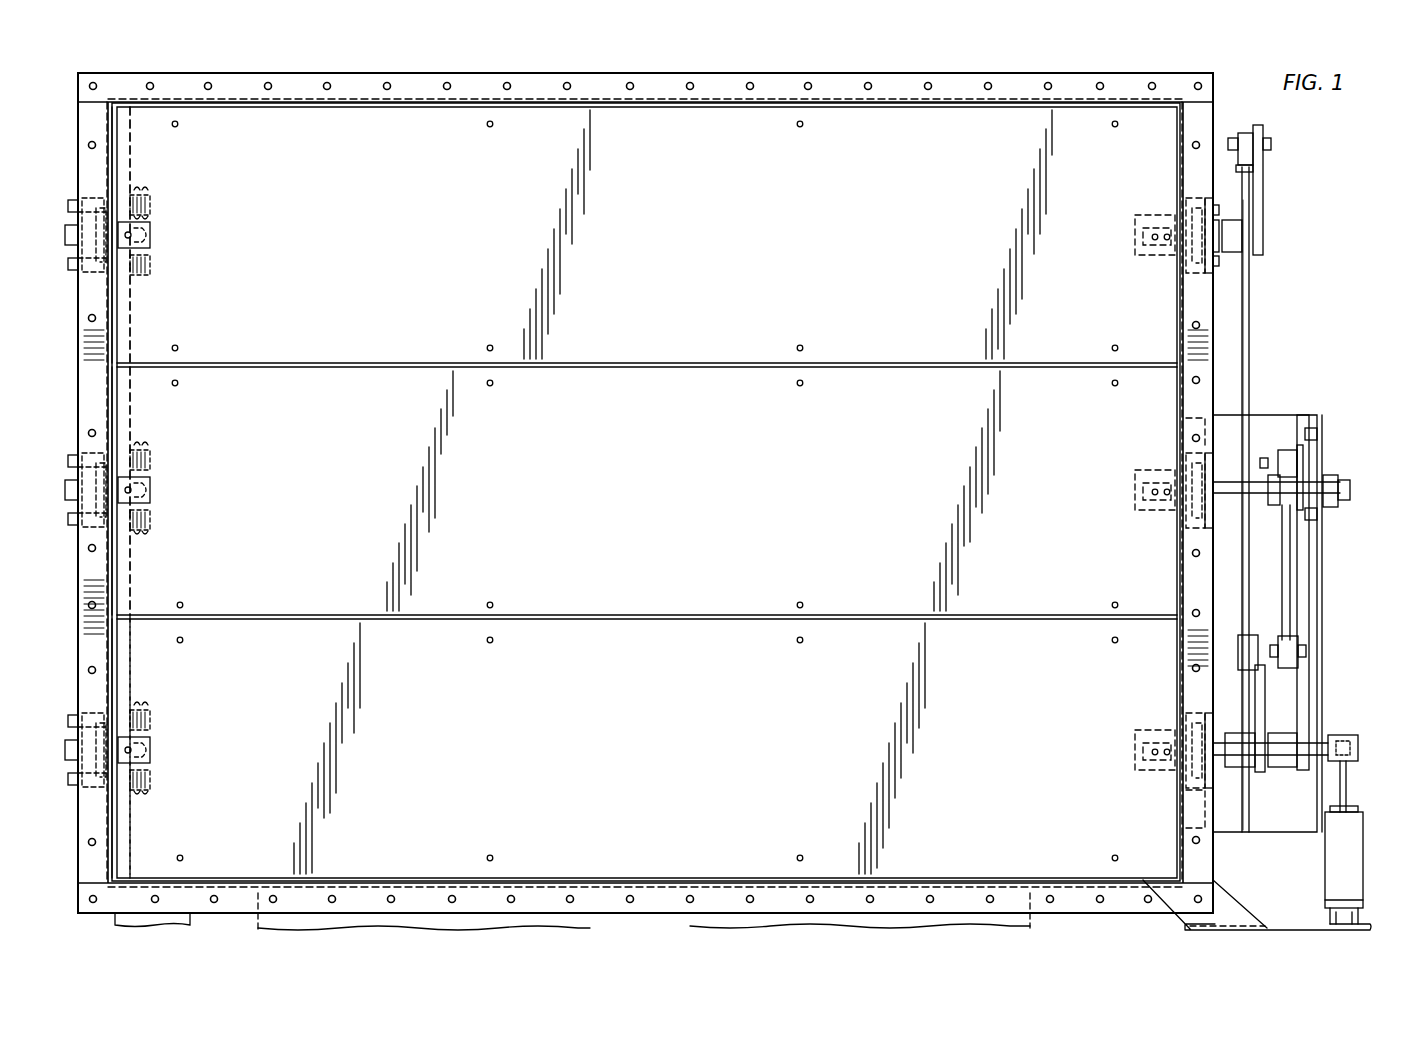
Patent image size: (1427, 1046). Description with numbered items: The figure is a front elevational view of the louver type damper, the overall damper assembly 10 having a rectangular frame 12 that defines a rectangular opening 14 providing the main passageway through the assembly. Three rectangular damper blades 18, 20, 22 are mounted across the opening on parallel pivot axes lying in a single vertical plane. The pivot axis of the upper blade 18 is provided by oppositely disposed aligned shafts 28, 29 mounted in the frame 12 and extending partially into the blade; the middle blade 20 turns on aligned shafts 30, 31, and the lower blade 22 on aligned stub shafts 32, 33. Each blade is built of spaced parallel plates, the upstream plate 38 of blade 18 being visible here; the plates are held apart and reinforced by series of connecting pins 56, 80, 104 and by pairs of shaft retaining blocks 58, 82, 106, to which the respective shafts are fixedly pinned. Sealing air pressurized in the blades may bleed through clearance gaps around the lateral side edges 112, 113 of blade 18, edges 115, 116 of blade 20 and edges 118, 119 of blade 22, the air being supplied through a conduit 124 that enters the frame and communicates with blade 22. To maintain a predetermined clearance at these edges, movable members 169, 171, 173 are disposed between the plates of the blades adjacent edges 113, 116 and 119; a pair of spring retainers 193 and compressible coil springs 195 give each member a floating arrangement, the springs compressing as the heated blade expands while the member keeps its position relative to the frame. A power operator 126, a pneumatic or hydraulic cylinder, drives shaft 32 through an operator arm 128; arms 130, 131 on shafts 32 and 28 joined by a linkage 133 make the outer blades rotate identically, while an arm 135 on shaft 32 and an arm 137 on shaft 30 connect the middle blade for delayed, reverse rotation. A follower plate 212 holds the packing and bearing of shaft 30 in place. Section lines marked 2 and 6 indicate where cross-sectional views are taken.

The section line 2- 2 is at (673, 52).
The section line 6- 6 is at (1090, 488).
The damper assembly 10 is at (1264, 380).
The rectangular frame 12 is at (885, 82).
The rectangular opening 14 is at (844, 104).
The damper blade 18 is at (609, 225).
The damper blade 20 is at (619, 469).
The damper blade 22 is at (638, 770).
The shaft 28 is at (1242, 236).
The shaft 29 is at (65, 232).
The shaft 30 is at (1264, 479).
The shaft 31 is at (65, 486).
The stub shaft 32 is at (1232, 750).
The stub shaft 33 is at (65, 750).
The upstream plate 38 is at (303, 348).
The connecting pins 56 is at (494, 124).
The shaft retaining blocks 58 is at (150, 232).
The connecting pins 80 is at (490, 386).
The shaft retaining blocks 82 is at (150, 490).
The connecting pins 104 is at (185, 640).
The shaft retaining blocks 106 is at (150, 750).
The lateral side edge 112 is at (1182, 296).
The lateral side edge 113 is at (112, 143).
The lateral side edge 115 is at (1182, 428).
The lateral side edge 116 is at (112, 412).
The lateral side edge 118 is at (1174, 812).
The lateral side edge 119 is at (112, 830).
The conduit 124 is at (404, 924).
The power operator 126 is at (1358, 834).
The operator arm 128 is at (1340, 738).
The arm 130 is at (1260, 706).
The arm 131 is at (1263, 190).
The linkage 133 is at (1249, 270).
The arm 135 is at (1309, 657).
The arm 137 is at (1300, 510).
The movable member 169 is at (130, 298).
The movable member 171 is at (130, 587).
The movable member 173 is at (130, 672).
The spring retainers 193 is at (150, 205).
The compressible coil springs 195 is at (148, 192).
The follower plate 212 is at (1222, 430).